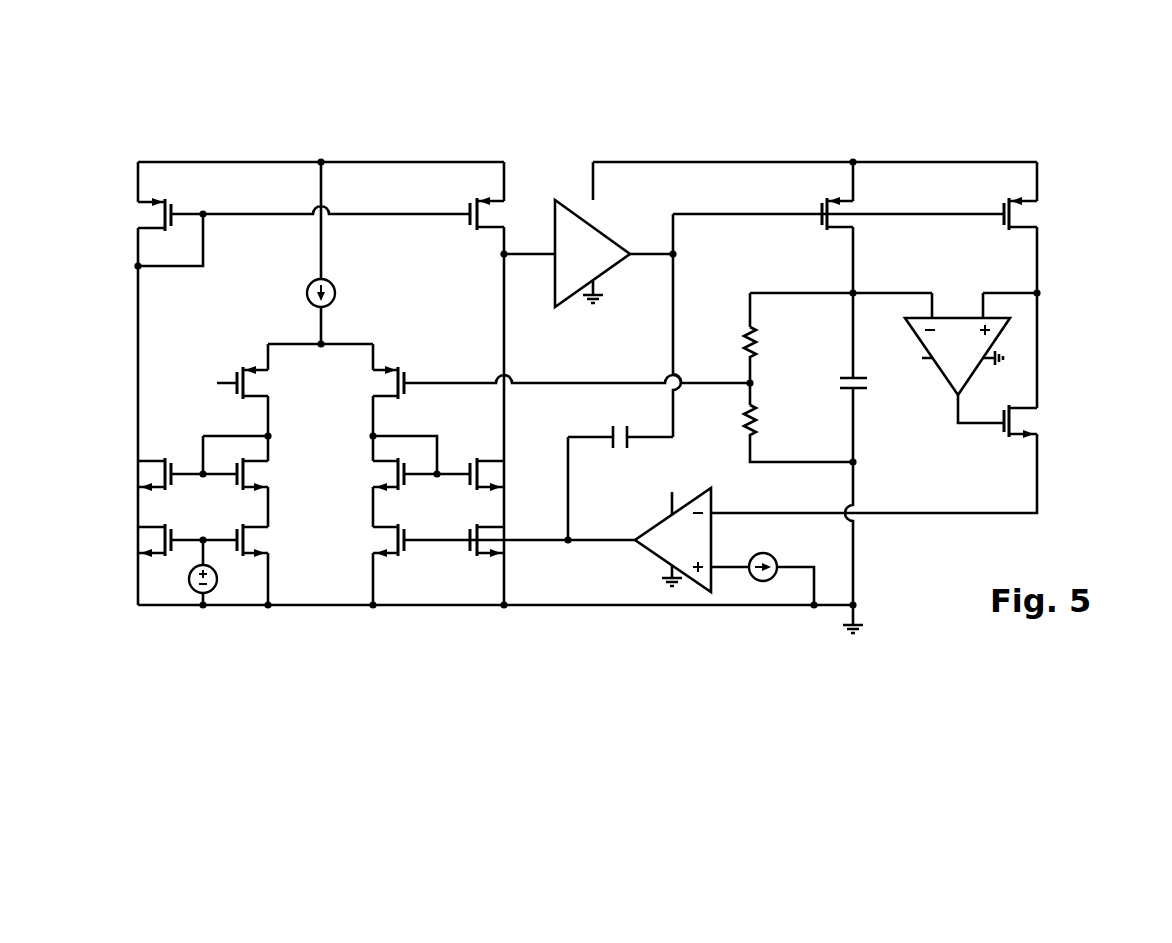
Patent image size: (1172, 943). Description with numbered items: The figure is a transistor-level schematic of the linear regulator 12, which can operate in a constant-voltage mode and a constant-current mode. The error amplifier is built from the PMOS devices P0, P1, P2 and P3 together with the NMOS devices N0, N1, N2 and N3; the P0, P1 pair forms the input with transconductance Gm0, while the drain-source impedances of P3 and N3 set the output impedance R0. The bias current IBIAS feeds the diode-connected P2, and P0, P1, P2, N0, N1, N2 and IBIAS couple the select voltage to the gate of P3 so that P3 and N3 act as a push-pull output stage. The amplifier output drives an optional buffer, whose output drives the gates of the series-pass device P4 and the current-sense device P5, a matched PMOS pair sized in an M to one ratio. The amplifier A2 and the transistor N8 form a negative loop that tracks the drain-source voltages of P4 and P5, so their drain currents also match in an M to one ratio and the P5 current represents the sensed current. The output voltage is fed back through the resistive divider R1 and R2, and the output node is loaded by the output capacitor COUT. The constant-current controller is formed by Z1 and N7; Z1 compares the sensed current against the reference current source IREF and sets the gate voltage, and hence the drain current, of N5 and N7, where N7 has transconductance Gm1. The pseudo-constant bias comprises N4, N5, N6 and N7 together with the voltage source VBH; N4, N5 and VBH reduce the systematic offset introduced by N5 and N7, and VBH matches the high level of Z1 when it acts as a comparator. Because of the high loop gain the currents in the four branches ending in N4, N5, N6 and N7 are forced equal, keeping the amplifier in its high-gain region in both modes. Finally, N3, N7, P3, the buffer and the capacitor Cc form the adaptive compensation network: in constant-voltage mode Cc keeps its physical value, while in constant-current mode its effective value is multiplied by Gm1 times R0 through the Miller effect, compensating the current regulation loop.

The linear regulator 12 is at (553, 112).
The PMOS transistor P2 is at (134, 214).
The PMOS transistor P3 is at (503, 213).
The PMOS transistor P0 is at (270, 382).
The PMOS transistor P1 is at (368, 382).
The PMOS transistor P4 is at (855, 212).
The PMOS transistor P5 is at (1037, 212).
The NMOS transistor N0 is at (272, 478).
The NMOS transistor N1 is at (368, 478).
The NMOS transistor N2 is at (134, 478).
The NMOS transistor N3 is at (505, 478).
The NMOS transistor N4 is at (272, 544).
The NMOS transistor N5 is at (368, 544).
The NMOS transistor N6 is at (134, 544).
The NMOS transistor N7 is at (506, 544).
The NMOS transistor N8 is at (1038, 424).
The resistor R1 is at (734, 351).
The resistor R2 is at (734, 428).
The compensation capacitor Cc is at (618, 424).
The output capacitor COUT is at (831, 402).
The amplifier A2 is at (957, 356).
The CC controller amplifier Z1 is at (673, 540).
The element buffer is at (592, 253).
The bias current source IBIAS is at (292, 294).
The voltage source VBH is at (181, 580).
The reference current source IREF is at (748, 559).